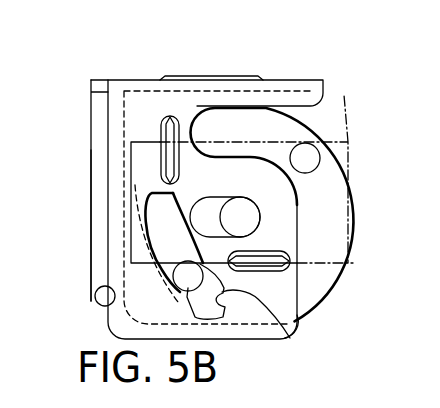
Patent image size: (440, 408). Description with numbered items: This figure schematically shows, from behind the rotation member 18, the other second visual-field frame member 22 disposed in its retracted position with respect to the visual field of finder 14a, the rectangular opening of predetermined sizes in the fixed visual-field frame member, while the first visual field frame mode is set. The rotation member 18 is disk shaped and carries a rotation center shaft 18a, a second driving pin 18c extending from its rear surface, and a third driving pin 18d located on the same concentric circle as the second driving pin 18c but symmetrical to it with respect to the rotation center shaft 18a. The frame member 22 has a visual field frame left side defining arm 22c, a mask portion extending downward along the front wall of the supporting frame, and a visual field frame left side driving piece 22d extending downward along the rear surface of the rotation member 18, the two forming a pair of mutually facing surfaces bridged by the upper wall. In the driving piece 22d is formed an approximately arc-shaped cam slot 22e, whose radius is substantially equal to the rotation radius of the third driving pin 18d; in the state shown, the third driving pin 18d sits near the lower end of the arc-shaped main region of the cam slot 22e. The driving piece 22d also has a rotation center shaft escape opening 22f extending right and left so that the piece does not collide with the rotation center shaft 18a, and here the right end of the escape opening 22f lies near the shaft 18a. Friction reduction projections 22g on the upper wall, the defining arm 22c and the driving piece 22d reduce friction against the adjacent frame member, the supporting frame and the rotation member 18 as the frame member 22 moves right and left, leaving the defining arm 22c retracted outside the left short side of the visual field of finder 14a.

The other second visual-field frame member 22 is at (220, 78).
The visual field frame left side defining arm 22c is at (92, 244).
The visual field frame left side driving piece 22d is at (273, 334).
The cam slot 22e is at (292, 328).
The rotation center shaft escape opening 22f is at (204, 200).
The friction reduction projections 22g is at (168, 121).
The visual field of finder 14a is at (258, 174).
The rotation member 18 is at (339, 283).
The rotation center shaft 18a is at (250, 221).
The second driving pin 18c is at (308, 164).
The third driving pin 18d is at (184, 287).